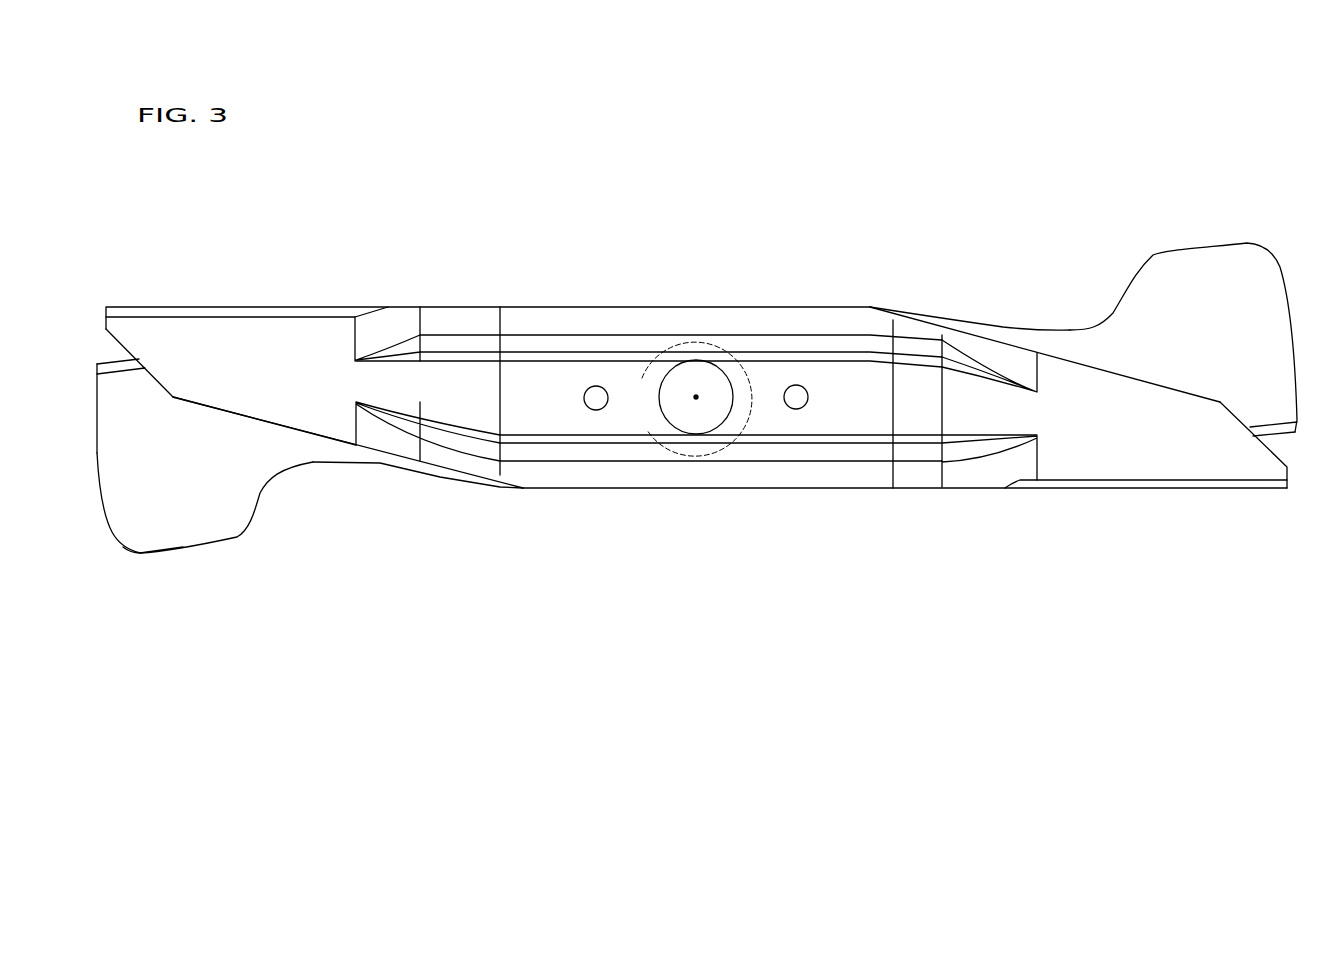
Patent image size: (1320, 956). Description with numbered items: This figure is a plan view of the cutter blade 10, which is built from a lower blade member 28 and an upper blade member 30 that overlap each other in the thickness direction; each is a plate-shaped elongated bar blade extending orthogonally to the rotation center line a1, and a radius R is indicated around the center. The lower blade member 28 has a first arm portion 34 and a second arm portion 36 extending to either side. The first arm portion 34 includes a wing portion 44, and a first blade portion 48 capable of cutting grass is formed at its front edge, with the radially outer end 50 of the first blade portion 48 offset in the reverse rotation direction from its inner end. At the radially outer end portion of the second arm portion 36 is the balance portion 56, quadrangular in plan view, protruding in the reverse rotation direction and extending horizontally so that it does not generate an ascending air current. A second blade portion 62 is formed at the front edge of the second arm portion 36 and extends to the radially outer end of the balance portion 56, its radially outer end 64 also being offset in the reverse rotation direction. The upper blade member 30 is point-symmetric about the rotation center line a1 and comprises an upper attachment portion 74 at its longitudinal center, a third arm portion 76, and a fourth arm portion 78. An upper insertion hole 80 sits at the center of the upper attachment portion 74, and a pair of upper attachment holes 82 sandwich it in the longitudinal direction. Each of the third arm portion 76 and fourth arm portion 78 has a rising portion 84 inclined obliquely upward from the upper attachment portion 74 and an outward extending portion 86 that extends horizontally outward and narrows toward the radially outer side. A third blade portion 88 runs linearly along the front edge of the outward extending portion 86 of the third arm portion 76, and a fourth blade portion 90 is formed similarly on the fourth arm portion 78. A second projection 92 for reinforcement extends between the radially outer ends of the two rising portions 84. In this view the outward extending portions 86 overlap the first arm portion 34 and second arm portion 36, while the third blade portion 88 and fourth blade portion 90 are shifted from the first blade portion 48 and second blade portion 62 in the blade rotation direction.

The cutter blade 10 is at (264, 186).
The lower blade member 28 is at (136, 564).
The upper blade member 30 is at (268, 299).
The first arm portion 34 is at (1008, 313).
The second arm portion 36 is at (366, 473).
The wing portion 44 is at (1232, 262).
The first blade portion 48 is at (1273, 436).
The radially outer end of the first blade portion 50 is at (1297, 432).
The balance portion 56 is at (187, 533).
The second blade portion 62 is at (118, 362).
The radially outer end of the second blade portion 64 is at (97, 363).
The upper attachment portion 74 is at (650, 470).
The third arm portion 76 is at (1067, 342).
The fourth arm portion 78 is at (324, 452).
The upper insertion hole 80 is at (708, 432).
The upper attachment holes 82 is at (596, 411).
The rising portion 84 is at (463, 460).
The outward extending portion 86 is at (250, 400).
The third blade portion 88 is at (1187, 489).
The fourth blade portion 90 is at (187, 310).
The second projection 92 is at (557, 415).
The rotation center line a1 is at (697, 400).
The radius R is at (647, 430).